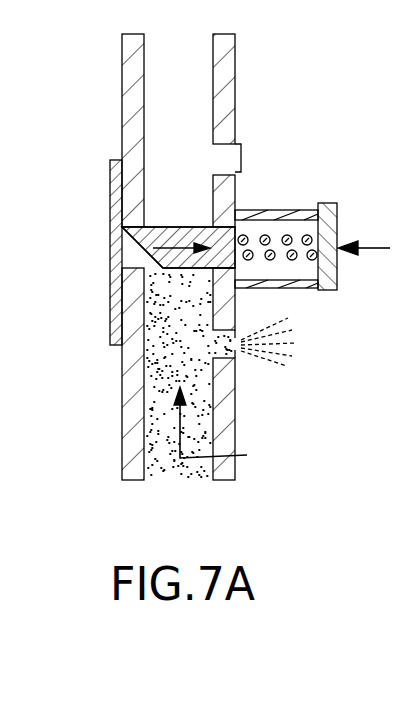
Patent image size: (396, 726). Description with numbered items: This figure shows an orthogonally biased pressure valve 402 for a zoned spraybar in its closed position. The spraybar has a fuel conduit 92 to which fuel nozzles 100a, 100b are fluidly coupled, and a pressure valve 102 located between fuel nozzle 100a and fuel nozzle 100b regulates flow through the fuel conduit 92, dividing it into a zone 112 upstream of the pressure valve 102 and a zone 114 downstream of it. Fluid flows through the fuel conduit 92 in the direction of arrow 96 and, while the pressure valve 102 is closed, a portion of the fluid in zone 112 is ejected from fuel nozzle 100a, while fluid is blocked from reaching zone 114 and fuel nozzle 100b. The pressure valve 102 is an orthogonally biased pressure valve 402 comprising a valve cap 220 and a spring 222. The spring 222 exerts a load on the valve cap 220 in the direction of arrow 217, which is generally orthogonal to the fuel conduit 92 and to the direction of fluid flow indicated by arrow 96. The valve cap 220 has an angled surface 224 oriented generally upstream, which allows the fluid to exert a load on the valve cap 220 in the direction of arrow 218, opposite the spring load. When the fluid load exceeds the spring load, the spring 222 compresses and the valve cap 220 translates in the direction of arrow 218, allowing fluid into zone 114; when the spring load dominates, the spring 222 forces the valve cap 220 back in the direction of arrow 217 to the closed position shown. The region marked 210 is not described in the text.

The fuel conduit 92 is at (236, 56).
The fuel nozzle 100b is at (249, 131).
The zone 114 is at (98, 40).
The pressure valve 102 is at (97, 231).
The valve cap 220 is at (196, 228).
The arrow 218 is at (160, 227).
The spring 222 is at (266, 236).
The orthogonally biased pressure valve 402 is at (323, 205).
The angled surface 224 is at (143, 250).
The arrow 217 is at (382, 250).
The chamber with particles 210 is at (190, 360).
The zone 112 is at (103, 307).
The fuel nozzle 100a is at (251, 369).
The arrow 96 is at (220, 427).